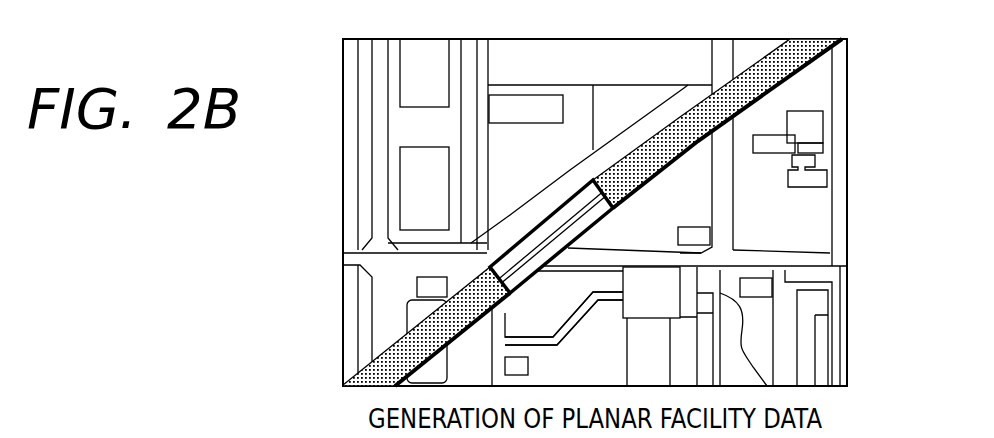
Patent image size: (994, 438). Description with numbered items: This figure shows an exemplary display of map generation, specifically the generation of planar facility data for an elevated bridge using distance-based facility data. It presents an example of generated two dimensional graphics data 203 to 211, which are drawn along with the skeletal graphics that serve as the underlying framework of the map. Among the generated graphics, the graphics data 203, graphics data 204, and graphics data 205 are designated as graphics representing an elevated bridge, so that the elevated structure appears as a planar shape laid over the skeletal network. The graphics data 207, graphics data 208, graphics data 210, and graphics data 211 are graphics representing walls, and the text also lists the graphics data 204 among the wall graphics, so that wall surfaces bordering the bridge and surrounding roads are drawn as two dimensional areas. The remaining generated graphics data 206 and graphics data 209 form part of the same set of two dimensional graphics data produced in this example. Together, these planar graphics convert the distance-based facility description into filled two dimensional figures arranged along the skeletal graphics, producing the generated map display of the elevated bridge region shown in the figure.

The two dimensional graphics data 203 is at (777, 71).
The two dimensional graphics data 204 is at (743, 113).
The two dimensional graphics data 205 is at (712, 85).
The two dimensional graphics data 206 is at (587, 212).
The two dimensional graphics data 207 is at (558, 268).
The two dimensional graphics data 208 is at (573, 196).
The two dimensional graphics data 209 is at (398, 344).
The two dimensional graphics data 210 is at (483, 317).
The two dimensional graphics data 211 is at (437, 287).